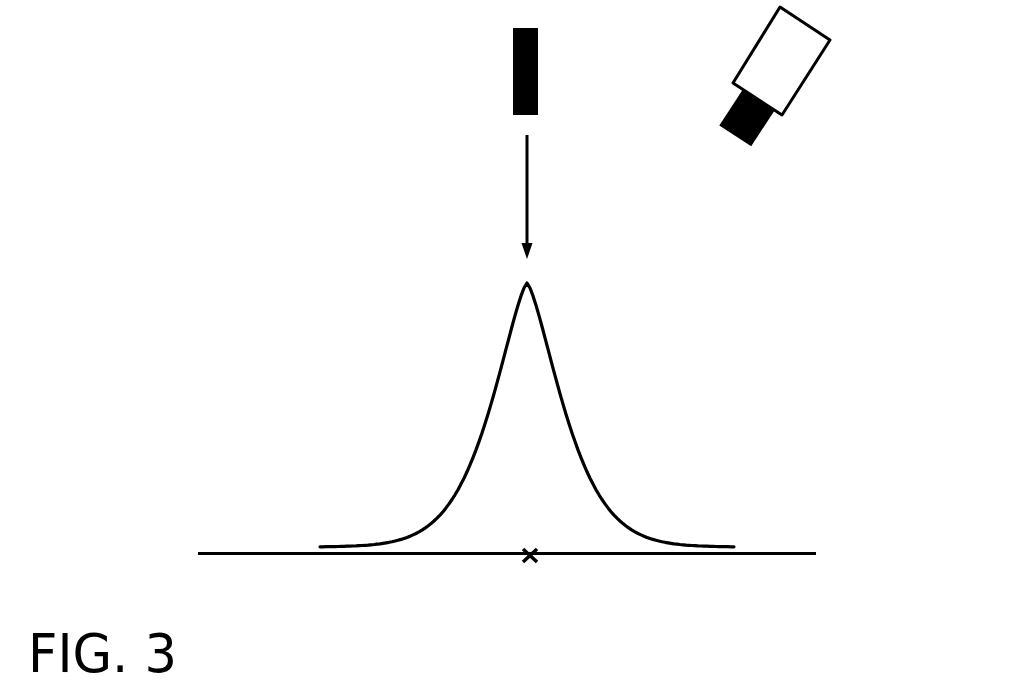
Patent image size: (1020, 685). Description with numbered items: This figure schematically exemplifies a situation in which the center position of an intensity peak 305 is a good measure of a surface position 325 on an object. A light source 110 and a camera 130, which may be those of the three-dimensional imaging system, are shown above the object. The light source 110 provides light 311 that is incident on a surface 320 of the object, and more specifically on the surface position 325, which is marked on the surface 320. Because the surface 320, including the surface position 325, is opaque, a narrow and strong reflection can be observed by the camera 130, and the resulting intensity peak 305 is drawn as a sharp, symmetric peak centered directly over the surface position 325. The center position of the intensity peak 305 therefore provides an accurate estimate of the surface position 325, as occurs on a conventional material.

The light source 110 is at (513, 72).
The camera 130 is at (800, 87).
The light 311 is at (522, 178).
The intensity peak 305 is at (431, 348).
The surface 320 is at (268, 542).
The surface position 325 is at (532, 578).